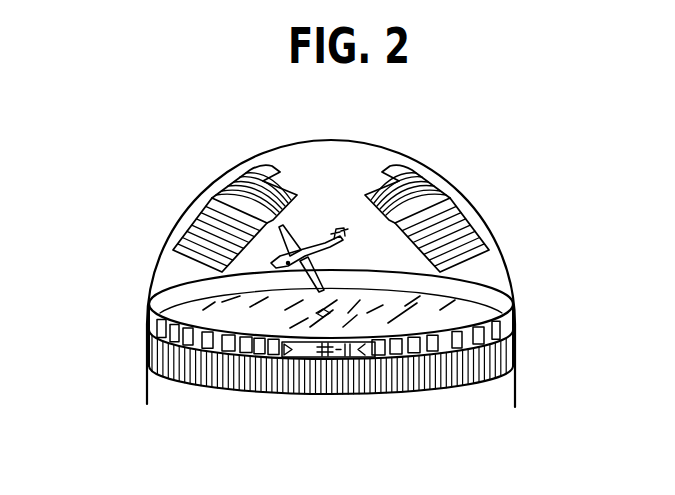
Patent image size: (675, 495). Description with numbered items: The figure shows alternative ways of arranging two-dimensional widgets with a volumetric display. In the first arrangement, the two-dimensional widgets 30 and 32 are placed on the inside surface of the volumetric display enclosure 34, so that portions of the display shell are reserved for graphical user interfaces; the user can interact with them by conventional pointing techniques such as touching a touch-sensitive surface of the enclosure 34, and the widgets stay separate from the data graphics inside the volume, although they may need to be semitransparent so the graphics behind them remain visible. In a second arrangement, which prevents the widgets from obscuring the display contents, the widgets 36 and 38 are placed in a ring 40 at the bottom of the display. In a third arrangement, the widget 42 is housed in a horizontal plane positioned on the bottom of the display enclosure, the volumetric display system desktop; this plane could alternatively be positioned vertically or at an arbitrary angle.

The 2D widget 30 is at (428, 192).
The 2D widget 32 is at (237, 173).
The volumetric display enclosure 34 is at (326, 140).
The widget 36 is at (453, 332).
The widget 38 is at (300, 360).
The ring 40 is at (512, 316).
The widget 42 is at (188, 305).